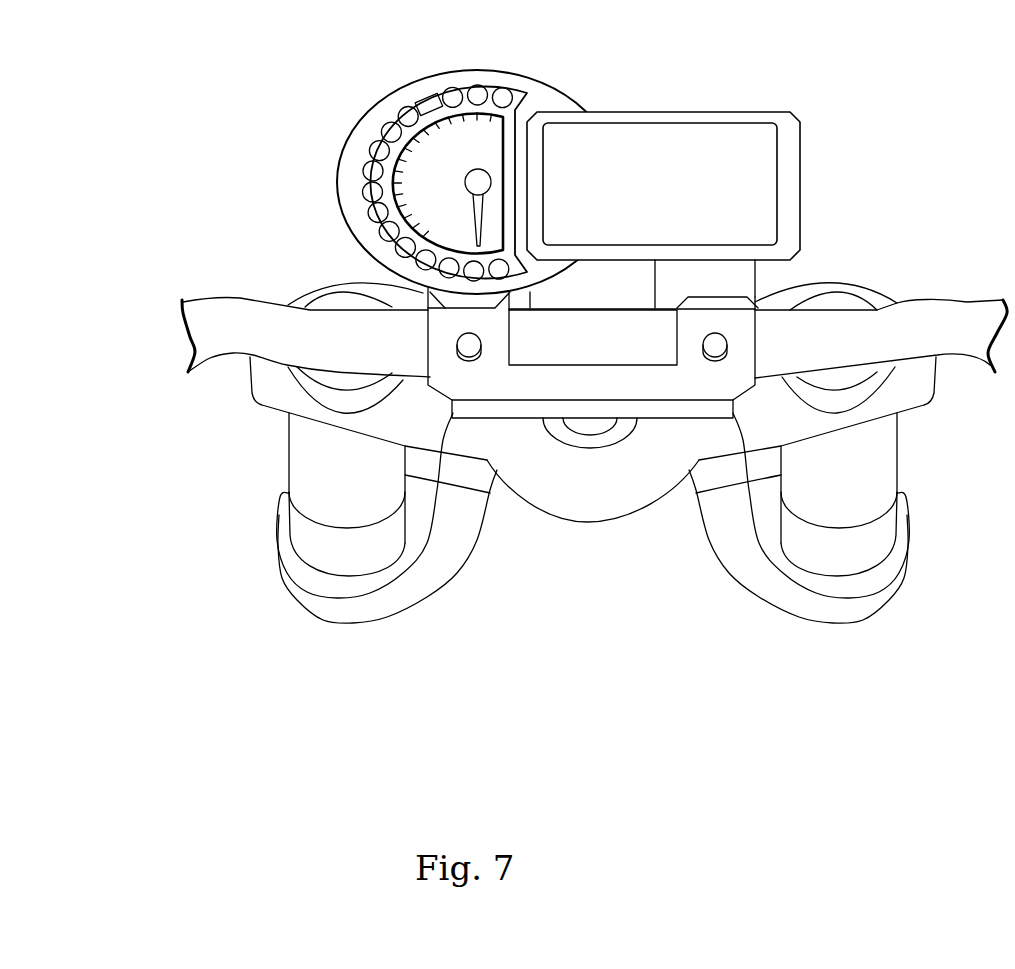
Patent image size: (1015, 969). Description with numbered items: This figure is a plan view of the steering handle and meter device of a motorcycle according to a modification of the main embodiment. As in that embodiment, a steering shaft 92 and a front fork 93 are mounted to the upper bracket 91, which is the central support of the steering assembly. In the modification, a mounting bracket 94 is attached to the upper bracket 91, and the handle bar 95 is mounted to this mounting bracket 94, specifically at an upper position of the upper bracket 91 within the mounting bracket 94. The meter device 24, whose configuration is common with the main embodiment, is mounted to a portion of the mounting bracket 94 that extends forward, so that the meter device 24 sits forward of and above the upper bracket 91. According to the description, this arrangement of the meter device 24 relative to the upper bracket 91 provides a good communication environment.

The meter device 24 is at (738, 104).
The handle bar 95 is at (970, 310).
The mounting bracket 94 is at (527, 408).
The upper bracket 91 is at (913, 388).
The steering shaft 92 is at (593, 437).
The front fork 93 is at (297, 452).